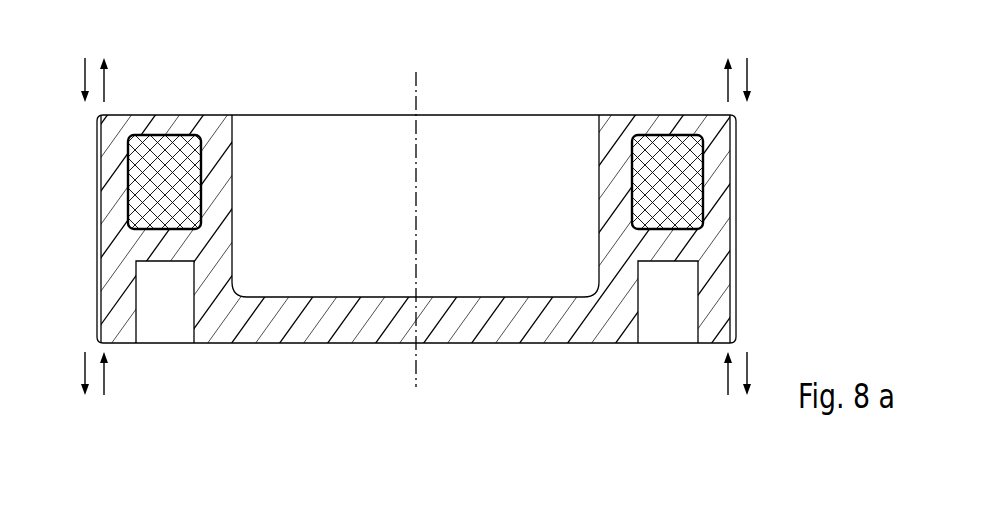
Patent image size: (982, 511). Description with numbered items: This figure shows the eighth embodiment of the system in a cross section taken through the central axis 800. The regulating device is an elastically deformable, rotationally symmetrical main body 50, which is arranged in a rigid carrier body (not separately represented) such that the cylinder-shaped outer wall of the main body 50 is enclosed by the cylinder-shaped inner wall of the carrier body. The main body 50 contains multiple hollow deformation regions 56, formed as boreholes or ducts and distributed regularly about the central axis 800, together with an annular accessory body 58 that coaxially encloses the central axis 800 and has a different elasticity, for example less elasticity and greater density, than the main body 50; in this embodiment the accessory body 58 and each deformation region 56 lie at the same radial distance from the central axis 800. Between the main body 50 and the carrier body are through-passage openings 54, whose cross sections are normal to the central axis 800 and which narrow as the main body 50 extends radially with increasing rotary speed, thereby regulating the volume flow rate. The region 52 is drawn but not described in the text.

The main body 50 is at (738, 189).
The cavity 52 is at (337, 162).
The through-passage opening 54 is at (97, 230).
The deformation region 56 is at (165, 332).
The accessory body 58 is at (171, 160).
The central axis 800 is at (418, 84).